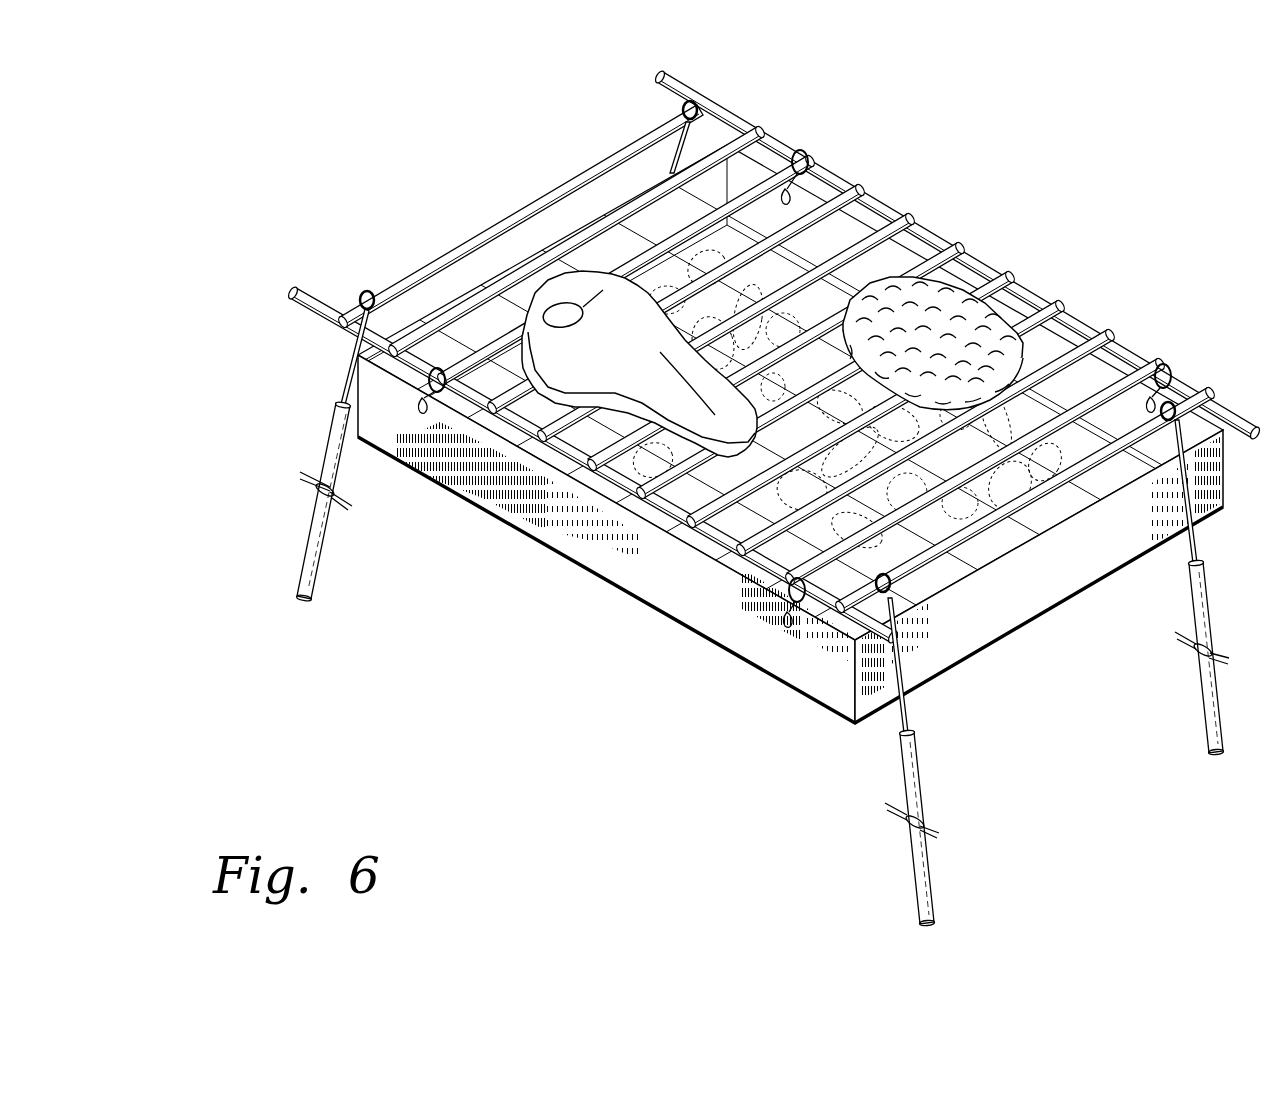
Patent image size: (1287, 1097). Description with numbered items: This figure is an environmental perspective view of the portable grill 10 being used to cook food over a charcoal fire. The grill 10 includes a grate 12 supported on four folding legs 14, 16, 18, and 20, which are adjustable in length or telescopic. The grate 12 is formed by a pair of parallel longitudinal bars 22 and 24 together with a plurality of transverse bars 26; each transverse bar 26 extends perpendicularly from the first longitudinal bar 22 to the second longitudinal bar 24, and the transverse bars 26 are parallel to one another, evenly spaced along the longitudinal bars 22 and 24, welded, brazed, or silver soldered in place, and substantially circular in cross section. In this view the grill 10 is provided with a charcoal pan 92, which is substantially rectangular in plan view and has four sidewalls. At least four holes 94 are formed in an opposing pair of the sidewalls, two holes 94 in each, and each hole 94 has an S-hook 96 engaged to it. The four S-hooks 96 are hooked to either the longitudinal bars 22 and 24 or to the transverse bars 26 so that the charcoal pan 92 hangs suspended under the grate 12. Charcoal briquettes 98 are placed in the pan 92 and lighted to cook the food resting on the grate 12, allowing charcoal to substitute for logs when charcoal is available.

The portable grill 10 is at (1101, 287).
The grate 12 is at (707, 560).
The folding leg 14 is at (905, 790).
The folding leg 16 is at (1210, 637).
The folding leg 18 is at (337, 402).
The folding leg 20 is at (703, 118).
The longitudinal bar 22 is at (570, 457).
The longitudinal bar 24 is at (880, 208).
The transverse bars 26 is at (1063, 290).
The charcoal pan 92 is at (613, 553).
The holes 94 is at (785, 200).
The S-hook 96 is at (800, 160).
The charcoal briquettes 98 is at (978, 495).